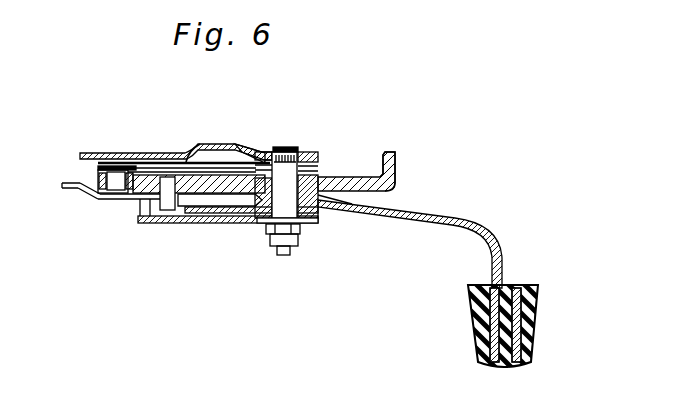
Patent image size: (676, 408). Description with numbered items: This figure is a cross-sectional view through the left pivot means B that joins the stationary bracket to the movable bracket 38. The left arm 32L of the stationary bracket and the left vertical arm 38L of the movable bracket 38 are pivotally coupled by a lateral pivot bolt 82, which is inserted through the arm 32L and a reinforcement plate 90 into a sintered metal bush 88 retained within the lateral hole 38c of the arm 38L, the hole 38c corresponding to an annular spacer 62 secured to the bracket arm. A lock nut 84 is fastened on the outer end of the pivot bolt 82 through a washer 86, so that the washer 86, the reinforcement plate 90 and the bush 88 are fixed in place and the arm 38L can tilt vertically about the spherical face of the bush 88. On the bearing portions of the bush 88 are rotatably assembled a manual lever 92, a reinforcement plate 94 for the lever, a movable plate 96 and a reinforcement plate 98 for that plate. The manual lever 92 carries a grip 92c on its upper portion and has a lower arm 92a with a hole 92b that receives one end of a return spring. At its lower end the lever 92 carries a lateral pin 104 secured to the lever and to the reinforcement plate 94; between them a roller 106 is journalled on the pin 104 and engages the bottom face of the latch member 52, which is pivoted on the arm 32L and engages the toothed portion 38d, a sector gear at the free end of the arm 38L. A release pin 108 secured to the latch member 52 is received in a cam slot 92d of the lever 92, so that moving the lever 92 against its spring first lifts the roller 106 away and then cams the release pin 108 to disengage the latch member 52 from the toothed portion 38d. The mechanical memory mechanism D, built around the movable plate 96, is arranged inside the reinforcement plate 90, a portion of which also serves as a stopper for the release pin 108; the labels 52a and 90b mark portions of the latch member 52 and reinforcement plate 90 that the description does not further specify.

The left arm 32L is at (88, 151).
The toothed portion 38d is at (190, 158).
The reinforcement plate 98 is at (220, 152).
The latch member 52 is at (147, 172).
The body block 52a is at (175, 180).
The release pin 108 is at (166, 210).
The reinforcement plate 94 is at (135, 167).
The roller 106 is at (100, 180).
The lower arm 92a is at (62, 185).
The hole 92b is at (80, 190).
The lateral pin 104 is at (107, 197).
The mechanical memory mechanism D is at (127, 209).
The cam slot 92d is at (148, 222).
The movable plate 96 is at (218, 207).
The reinforcement plate 90 is at (252, 222).
The bottom plate 90b is at (193, 224).
The sintered metal bush 88 is at (308, 218).
The lateral hole 38c is at (279, 147).
The left pivot means B is at (303, 141).
The washer 86 is at (262, 232).
The lock nut 84 is at (297, 237).
The lateral pivot bolt 82 is at (282, 255).
The left vertical arm 38L is at (345, 178).
The movable bracket 38 is at (387, 167).
The annular spacer 62 is at (340, 205).
The manual lever 92 is at (412, 197).
The grip 92c is at (527, 310).